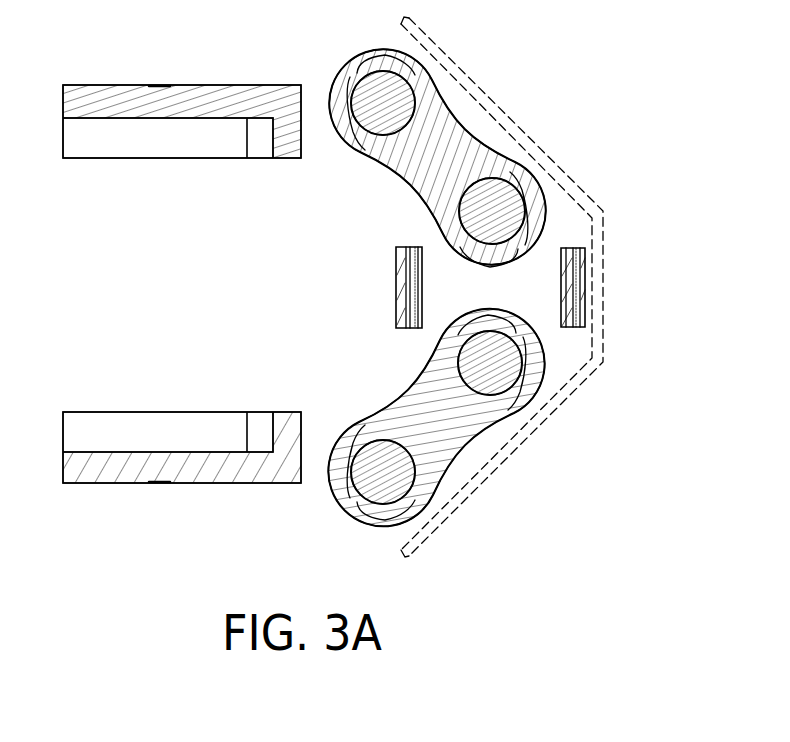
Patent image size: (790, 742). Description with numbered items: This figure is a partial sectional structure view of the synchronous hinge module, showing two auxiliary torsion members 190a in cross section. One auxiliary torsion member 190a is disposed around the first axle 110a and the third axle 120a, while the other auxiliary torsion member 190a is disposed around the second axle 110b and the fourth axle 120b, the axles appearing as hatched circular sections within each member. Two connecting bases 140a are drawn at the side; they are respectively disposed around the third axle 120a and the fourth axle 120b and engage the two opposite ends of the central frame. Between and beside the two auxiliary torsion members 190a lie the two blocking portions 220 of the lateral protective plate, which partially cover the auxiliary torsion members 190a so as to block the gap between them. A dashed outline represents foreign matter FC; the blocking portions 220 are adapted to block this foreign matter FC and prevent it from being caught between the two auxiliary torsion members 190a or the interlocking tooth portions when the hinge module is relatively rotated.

The connecting base 140a is at (192, 107).
The third axle 120a is at (388, 95).
The auxiliary torsion member 190a is at (443, 138).
The first axle 110a is at (492, 207).
The blocking portion 220 is at (410, 293).
The foreign matter FC is at (598, 303).
The second axle 110b is at (490, 367).
The fourth axle 120b is at (388, 478).